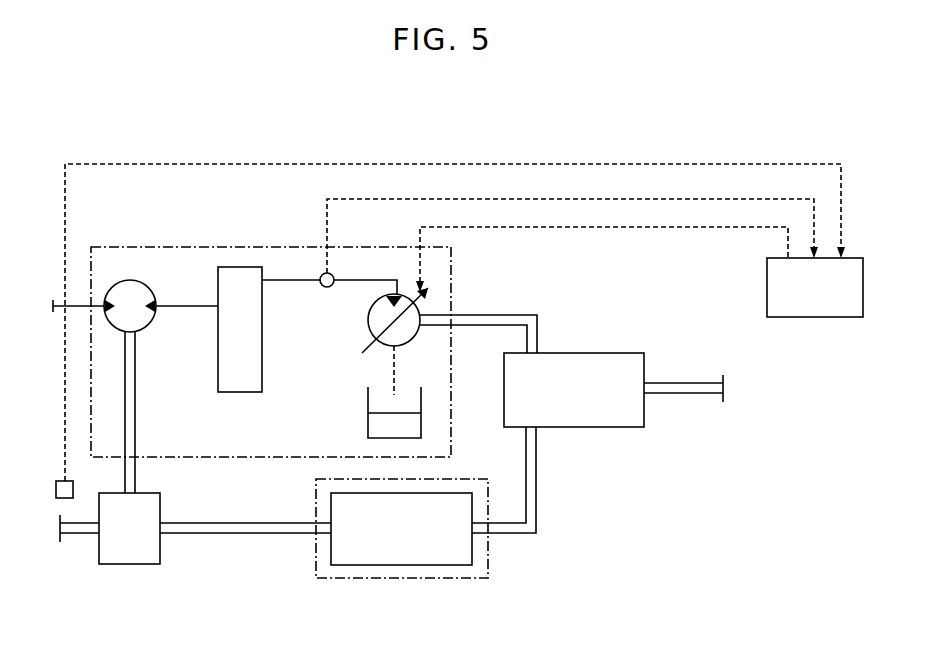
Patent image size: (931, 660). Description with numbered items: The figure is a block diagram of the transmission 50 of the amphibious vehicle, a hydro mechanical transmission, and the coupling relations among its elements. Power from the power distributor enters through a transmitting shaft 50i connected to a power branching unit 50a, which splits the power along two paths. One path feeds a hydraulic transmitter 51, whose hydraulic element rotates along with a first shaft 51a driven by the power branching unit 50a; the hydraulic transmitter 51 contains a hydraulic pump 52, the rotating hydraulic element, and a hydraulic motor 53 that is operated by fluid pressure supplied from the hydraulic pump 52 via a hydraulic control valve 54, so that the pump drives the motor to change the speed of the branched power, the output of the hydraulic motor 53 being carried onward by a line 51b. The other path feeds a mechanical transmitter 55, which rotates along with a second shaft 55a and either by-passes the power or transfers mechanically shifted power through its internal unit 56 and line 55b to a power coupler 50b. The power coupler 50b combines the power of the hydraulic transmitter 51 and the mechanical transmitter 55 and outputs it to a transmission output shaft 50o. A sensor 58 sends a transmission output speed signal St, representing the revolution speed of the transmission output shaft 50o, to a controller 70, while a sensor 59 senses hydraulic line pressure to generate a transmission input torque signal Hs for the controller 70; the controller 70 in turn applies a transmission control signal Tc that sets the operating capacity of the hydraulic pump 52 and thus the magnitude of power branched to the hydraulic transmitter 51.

The transmission 50 is at (60, 120).
The hydraulic transmitter 51 is at (174, 247).
The first shaft 51a is at (500, 315).
The compressor inlet pipe 51b is at (136, 425).
The hydraulic pump 52 is at (368, 320).
The hydraulic motor 53 is at (147, 290).
The hydraulic control valve 54 is at (262, 358).
The mechanical transmitter 55 is at (460, 578).
The second shaft 55a is at (537, 490).
The condenser outlet pipe 55b is at (270, 535).
The condenser 56 is at (400, 565).
The sensor 58 is at (57, 484).
The sensor 59 is at (320, 287).
The power branching unit 50a is at (583, 353).
The power coupler 50b is at (130, 564).
The transmitting shaft 50i is at (686, 383).
The transmission output shaft 50o is at (73, 536).
The controller 70 is at (857, 258).